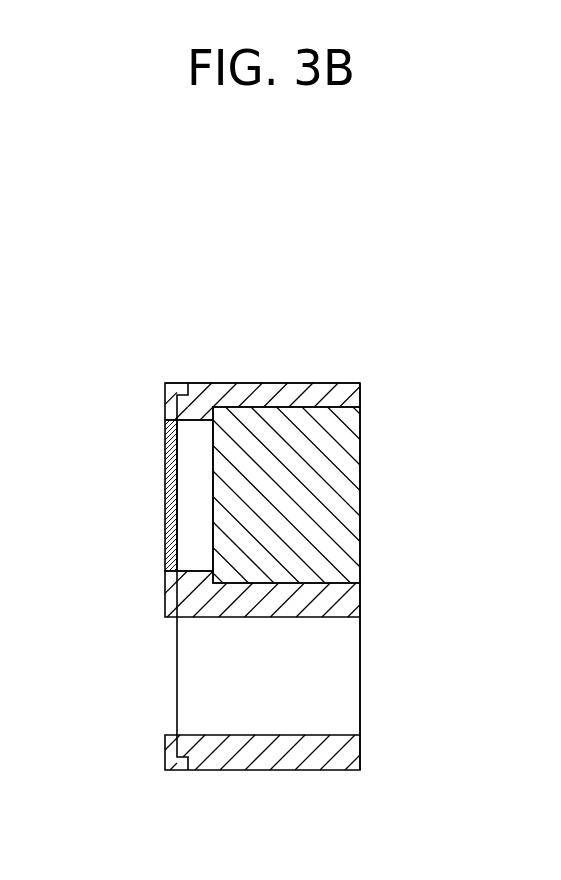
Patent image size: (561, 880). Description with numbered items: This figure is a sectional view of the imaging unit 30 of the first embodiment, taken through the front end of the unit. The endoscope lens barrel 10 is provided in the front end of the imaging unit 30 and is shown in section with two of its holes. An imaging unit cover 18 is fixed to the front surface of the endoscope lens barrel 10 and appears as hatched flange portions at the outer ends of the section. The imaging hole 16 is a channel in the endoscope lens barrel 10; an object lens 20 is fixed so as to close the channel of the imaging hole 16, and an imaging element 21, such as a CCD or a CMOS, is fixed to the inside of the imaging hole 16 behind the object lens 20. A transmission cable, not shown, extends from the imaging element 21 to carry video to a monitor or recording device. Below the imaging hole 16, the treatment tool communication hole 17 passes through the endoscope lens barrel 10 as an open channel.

The endoscope lens barrel 10 is at (362, 394).
The imaging unit 30 is at (351, 358).
The imaging unit cover 18 is at (167, 405).
The object lens 20 is at (170, 463).
The imaging hole 16 is at (190, 521).
The imaging element 21 is at (322, 490).
The treatment tool communication hole 17 is at (212, 681).